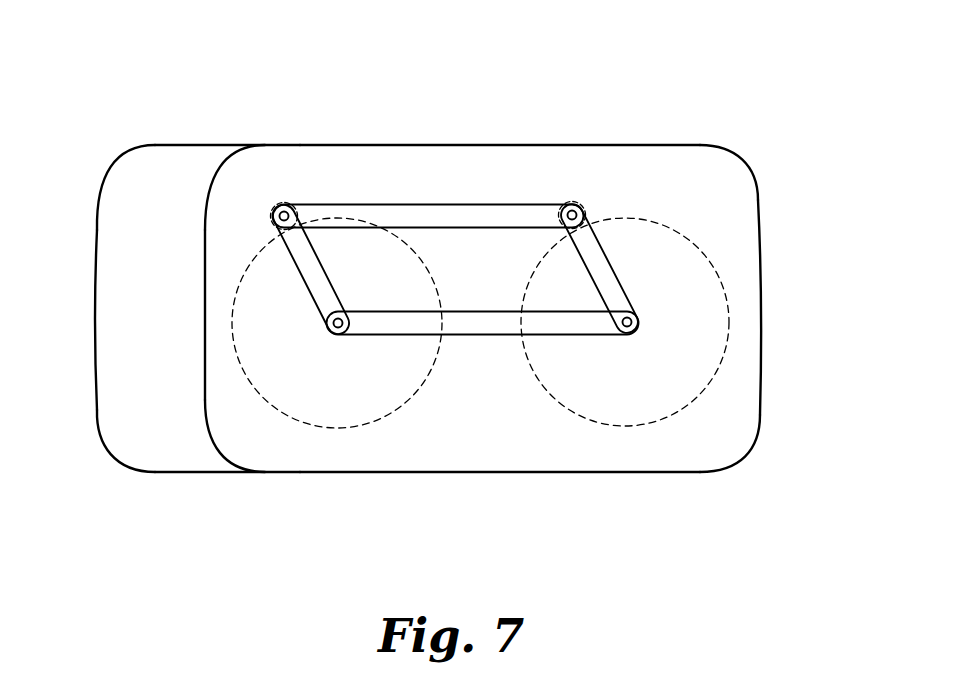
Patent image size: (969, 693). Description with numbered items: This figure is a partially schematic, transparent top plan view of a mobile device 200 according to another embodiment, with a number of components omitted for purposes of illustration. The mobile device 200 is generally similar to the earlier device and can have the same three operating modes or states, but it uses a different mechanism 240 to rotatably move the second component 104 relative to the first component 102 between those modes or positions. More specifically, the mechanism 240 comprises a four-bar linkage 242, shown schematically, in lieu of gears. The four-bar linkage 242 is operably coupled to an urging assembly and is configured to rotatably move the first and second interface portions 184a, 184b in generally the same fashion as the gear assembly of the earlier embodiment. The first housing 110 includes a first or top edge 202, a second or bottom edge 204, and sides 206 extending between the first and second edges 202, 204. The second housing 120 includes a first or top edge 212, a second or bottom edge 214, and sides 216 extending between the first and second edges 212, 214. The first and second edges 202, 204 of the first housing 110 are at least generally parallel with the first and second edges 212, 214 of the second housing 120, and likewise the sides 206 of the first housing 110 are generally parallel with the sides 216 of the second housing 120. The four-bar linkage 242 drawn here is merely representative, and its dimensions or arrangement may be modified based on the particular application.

The mobile device 200 is at (645, 70).
The first or top edge 202 is at (172, 145).
The second or bottom edge 204 is at (175, 472).
The sides 206 is at (95, 282).
The first or top edge 212 is at (385, 145).
The second or bottom edge 214 is at (455, 472).
The sides 216 is at (205, 358).
The first component 102 is at (115, 428).
The second component 104 is at (720, 447).
The first housing 110 is at (122, 463).
The second housing 120 is at (753, 437).
The first interface portion 184a is at (283, 203).
The second interface portion 184b is at (572, 202).
The mechanism 240 is at (642, 188).
The four-bar linkage 242 is at (603, 267).